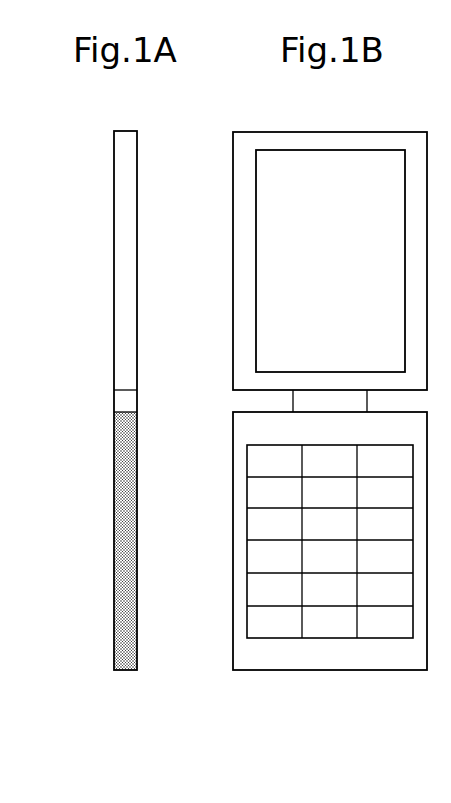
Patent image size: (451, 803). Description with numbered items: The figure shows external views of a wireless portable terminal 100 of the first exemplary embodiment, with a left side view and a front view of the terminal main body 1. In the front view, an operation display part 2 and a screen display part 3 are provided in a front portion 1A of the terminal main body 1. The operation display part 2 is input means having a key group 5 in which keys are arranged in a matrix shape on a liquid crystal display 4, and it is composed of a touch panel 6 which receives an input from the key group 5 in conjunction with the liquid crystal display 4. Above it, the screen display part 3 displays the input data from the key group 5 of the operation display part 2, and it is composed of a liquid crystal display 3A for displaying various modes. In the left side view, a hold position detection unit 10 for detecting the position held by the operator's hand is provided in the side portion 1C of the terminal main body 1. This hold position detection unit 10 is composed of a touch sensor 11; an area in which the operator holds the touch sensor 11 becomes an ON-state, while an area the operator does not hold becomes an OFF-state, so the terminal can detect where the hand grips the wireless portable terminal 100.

In FIG. 1A, the terminal main body 1 is at (124, 195).
In FIG. 1B, the terminal main body 1 is at (285, 140).
In FIG. 1B, the front portion 1A is at (274, 660).
In FIG. 1A, the side portion 1C is at (122, 638).
In FIG. 1B, the operation display part 2 is at (242, 430).
In FIG. 1B, the screen display part 3 is at (265, 192).
In FIG. 1B, the liquid crystal display 3A is at (265, 232).
In FIG. 1B, the liquid crystal display 4 is at (243, 436).
In FIG. 1B, the key group 5 is at (258, 500).
In FIG. 1B, the touch panel 6 is at (238, 598).
In FIG. 1A, the hold position detection unit 10 is at (124, 450).
In FIG. 1A, the touch sensor 11 is at (122, 505).
In FIG. 1A, the wireless portable terminal 100 is at (120, 688).
In FIG. 1B, the wireless portable terminal 100 is at (328, 690).